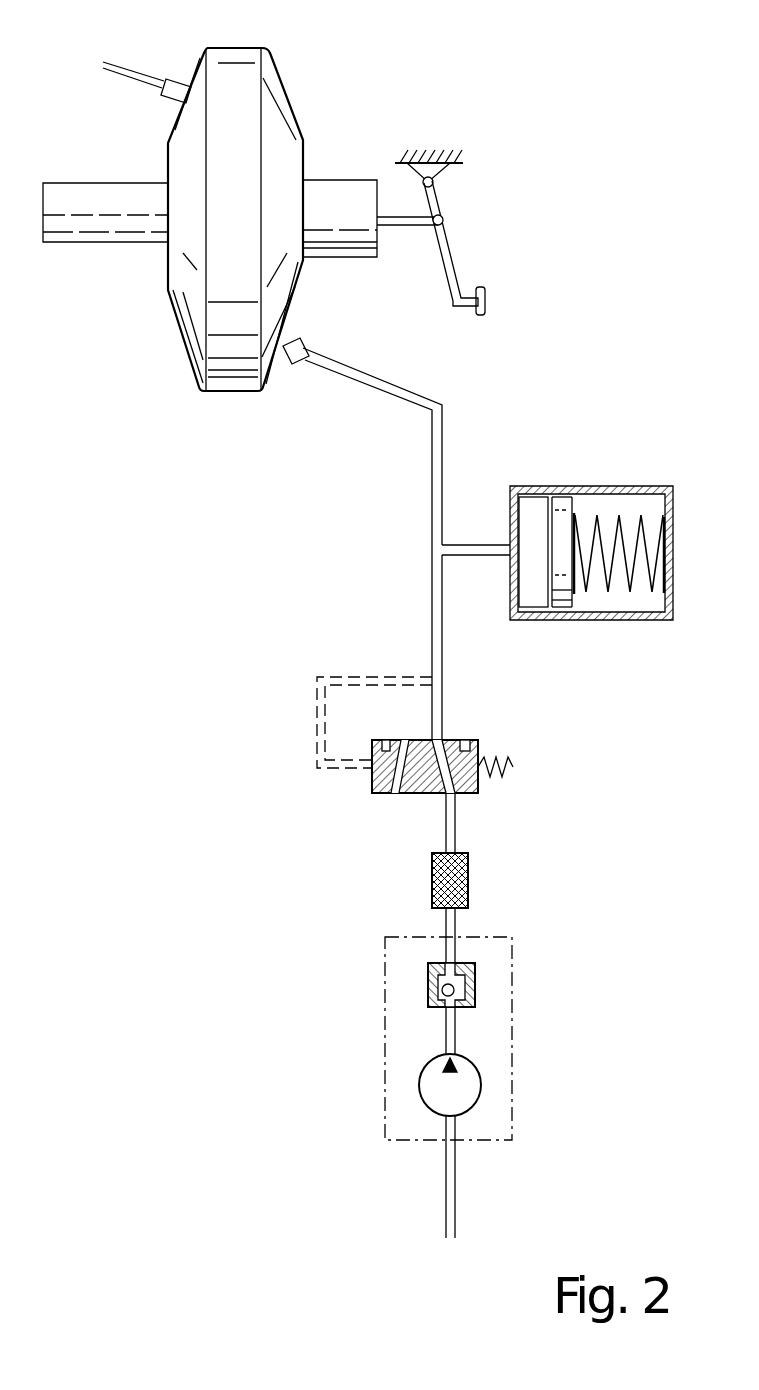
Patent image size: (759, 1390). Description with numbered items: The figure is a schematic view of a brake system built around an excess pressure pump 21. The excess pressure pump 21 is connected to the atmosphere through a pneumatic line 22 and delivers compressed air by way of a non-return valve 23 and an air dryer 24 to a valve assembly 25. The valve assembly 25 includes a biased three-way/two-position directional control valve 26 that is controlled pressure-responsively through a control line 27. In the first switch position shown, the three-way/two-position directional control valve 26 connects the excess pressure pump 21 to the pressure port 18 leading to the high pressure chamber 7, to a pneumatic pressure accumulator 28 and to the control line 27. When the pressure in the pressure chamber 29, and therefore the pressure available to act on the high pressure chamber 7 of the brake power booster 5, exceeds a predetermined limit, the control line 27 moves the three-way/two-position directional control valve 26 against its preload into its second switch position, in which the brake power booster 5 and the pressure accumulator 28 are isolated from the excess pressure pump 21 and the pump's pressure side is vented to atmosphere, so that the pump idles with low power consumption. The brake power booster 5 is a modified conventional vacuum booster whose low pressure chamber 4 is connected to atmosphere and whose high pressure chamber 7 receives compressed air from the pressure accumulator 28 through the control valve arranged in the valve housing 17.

The low pressure chamber 4 is at (193, 153).
The brake power booster 5 is at (285, 78).
The high pressure chamber 7 is at (275, 143).
The valve housing 17 is at (344, 248).
The pressure port 18 is at (288, 356).
The excess pressure pump 21 is at (418, 1085).
The pneumatic line 22 is at (446, 1187).
The non-return valve 23 is at (428, 990).
The air dryer 24 is at (468, 876).
The valve assembly 25 is at (378, 798).
The three-way/two-position directional control valve 26 is at (435, 789).
The control line 27 is at (316, 738).
The pneumatic pressure accumulator 28 is at (600, 472).
The pressure chamber 29 is at (532, 518).